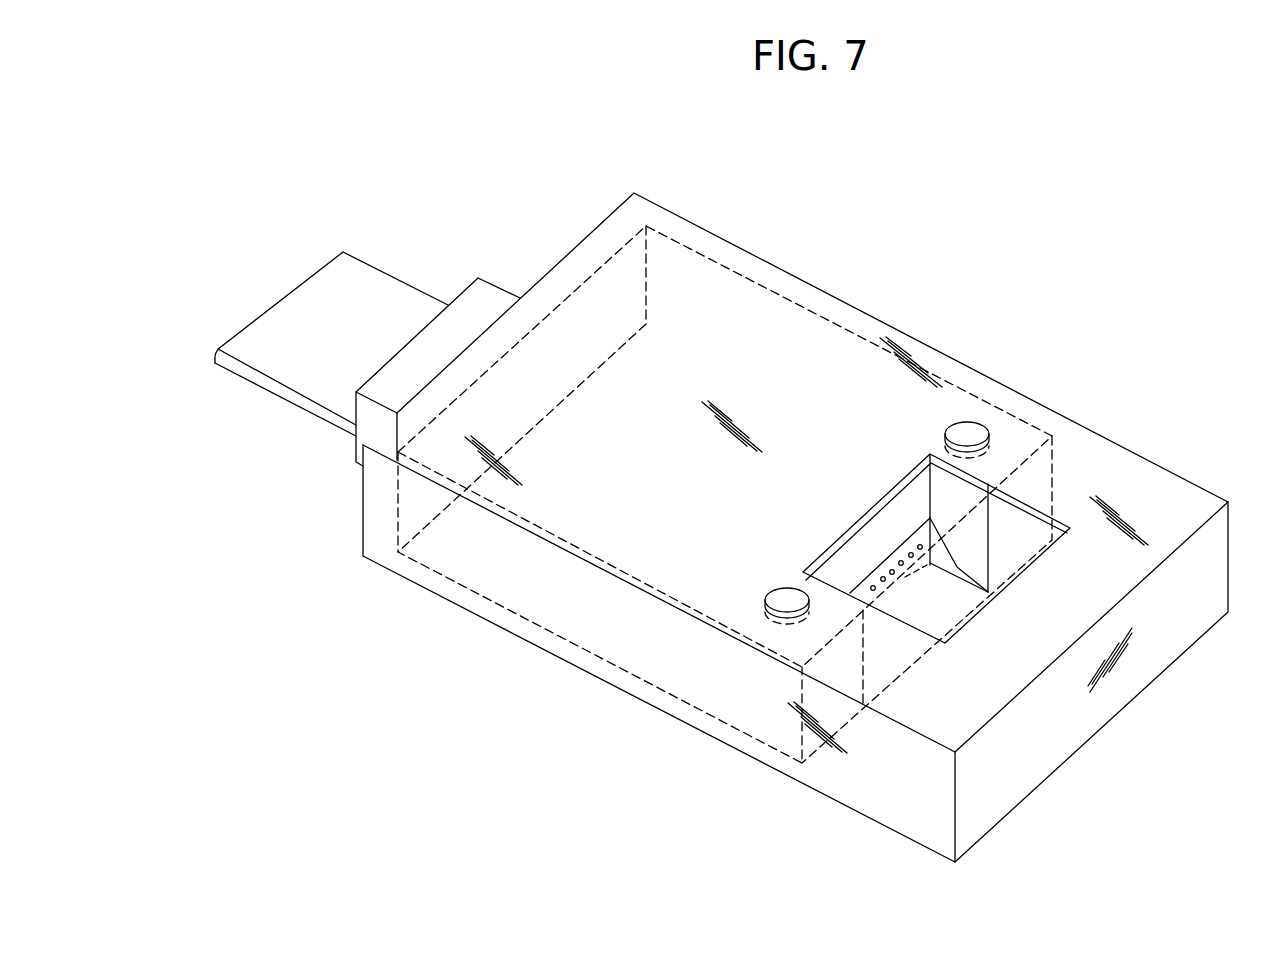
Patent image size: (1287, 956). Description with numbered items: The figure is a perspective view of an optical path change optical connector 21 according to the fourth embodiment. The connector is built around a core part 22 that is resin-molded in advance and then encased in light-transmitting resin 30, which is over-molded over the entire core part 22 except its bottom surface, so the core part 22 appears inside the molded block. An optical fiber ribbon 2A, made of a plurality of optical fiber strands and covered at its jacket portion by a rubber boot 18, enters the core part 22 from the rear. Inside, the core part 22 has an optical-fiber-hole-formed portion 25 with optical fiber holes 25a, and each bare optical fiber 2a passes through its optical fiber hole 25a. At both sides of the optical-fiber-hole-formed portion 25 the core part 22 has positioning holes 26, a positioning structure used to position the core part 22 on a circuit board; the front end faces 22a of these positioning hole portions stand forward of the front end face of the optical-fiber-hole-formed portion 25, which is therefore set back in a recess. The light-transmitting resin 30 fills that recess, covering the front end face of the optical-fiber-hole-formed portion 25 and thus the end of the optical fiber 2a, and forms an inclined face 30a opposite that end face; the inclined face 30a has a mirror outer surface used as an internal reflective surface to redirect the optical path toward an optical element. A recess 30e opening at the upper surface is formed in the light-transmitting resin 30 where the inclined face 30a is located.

The optical path change optical connector 21 is at (928, 246).
The core part 22 is at (775, 292).
The optical fiber ribbon 2A is at (374, 280).
The rubber boot 18 is at (492, 300).
The front end face of the core part 22a is at (850, 548).
The optical-fiber-hole-formed portion 25 is at (882, 520).
The optical fiber hole 25a is at (936, 619).
The optical fiber 2a is at (883, 581).
The positioning hole 26 is at (967, 433).
The light-transmitting resin 30 is at (1066, 537).
The inclined face 30a is at (962, 619).
The recess 30e is at (957, 492).